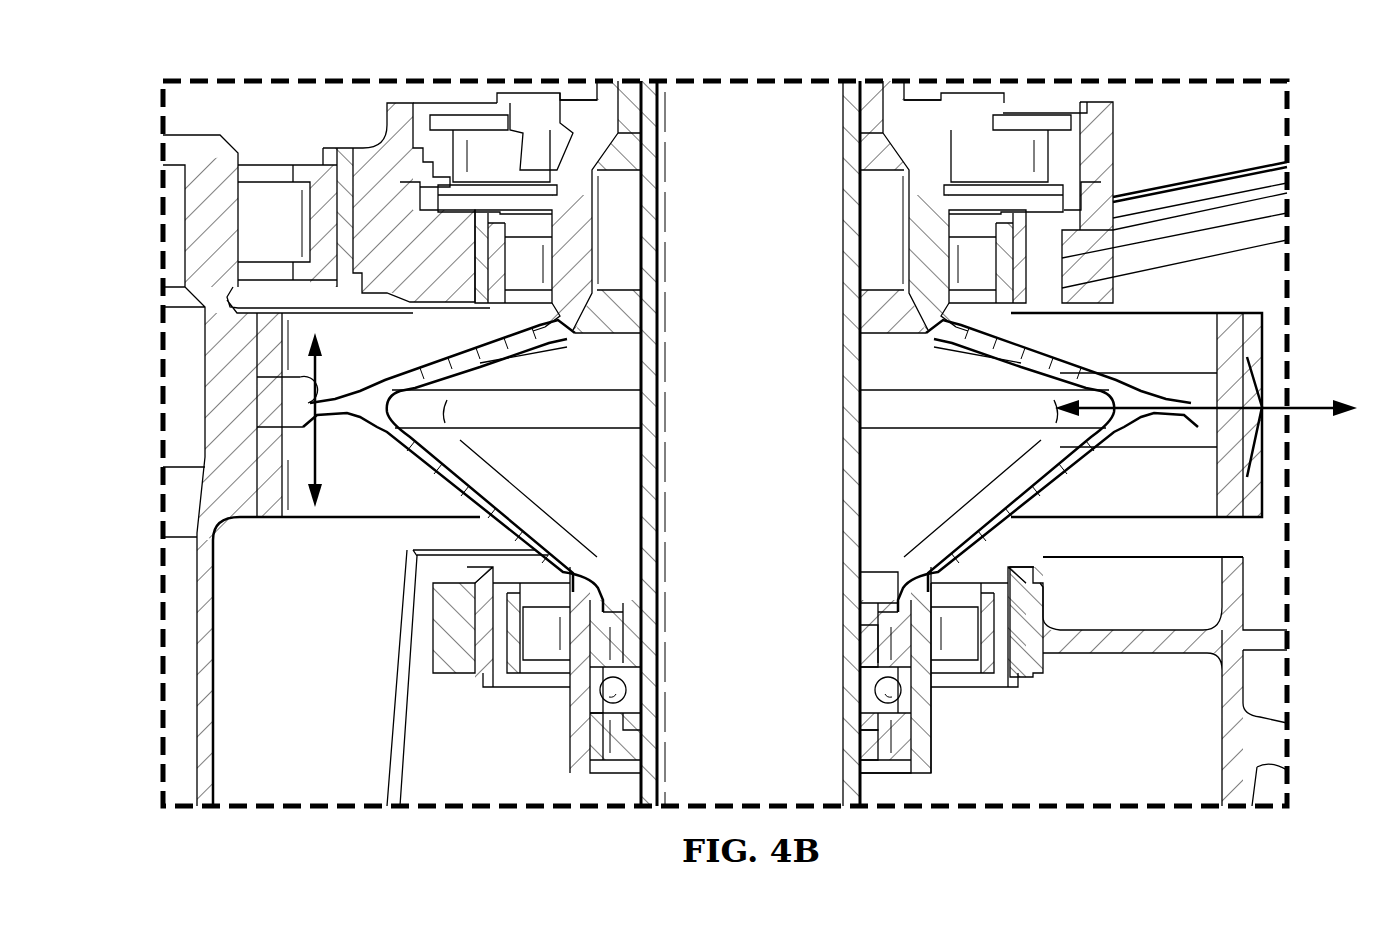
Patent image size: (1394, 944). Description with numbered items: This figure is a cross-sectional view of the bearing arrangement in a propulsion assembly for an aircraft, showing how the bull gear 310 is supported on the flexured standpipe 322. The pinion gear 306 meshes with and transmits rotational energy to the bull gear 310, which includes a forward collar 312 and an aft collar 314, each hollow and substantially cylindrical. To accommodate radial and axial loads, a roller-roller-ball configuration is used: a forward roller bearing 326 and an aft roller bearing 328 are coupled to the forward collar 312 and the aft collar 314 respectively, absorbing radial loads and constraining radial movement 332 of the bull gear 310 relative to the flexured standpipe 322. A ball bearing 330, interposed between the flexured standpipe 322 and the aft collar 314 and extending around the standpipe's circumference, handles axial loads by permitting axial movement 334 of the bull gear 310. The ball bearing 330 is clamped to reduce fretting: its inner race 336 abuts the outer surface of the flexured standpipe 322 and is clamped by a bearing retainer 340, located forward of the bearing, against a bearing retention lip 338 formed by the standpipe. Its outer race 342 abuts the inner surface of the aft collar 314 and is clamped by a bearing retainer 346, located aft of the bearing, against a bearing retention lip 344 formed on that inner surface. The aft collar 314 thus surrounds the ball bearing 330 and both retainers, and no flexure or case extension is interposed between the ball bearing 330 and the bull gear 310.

The pinion gear 306 is at (217, 368).
The bull gear 310 is at (1270, 400).
The forward collar 312 is at (542, 175).
The aft collar 314 is at (932, 767).
The flexured standpipe 322 is at (860, 445).
The forward roller bearing 326 is at (537, 267).
The aft roller bearing 328 is at (552, 628).
The ball bearing 330 is at (620, 692).
The radial movement 332 is at (1290, 378).
The axial movement 334 is at (323, 467).
The inner race 336 is at (867, 680).
The bearing retention lip 338 is at (870, 737).
The bearing retainer 340 is at (867, 632).
The outer race 342 is at (905, 705).
The bearing retention lip 344 is at (593, 693).
The bearing retainer 346 is at (593, 723).